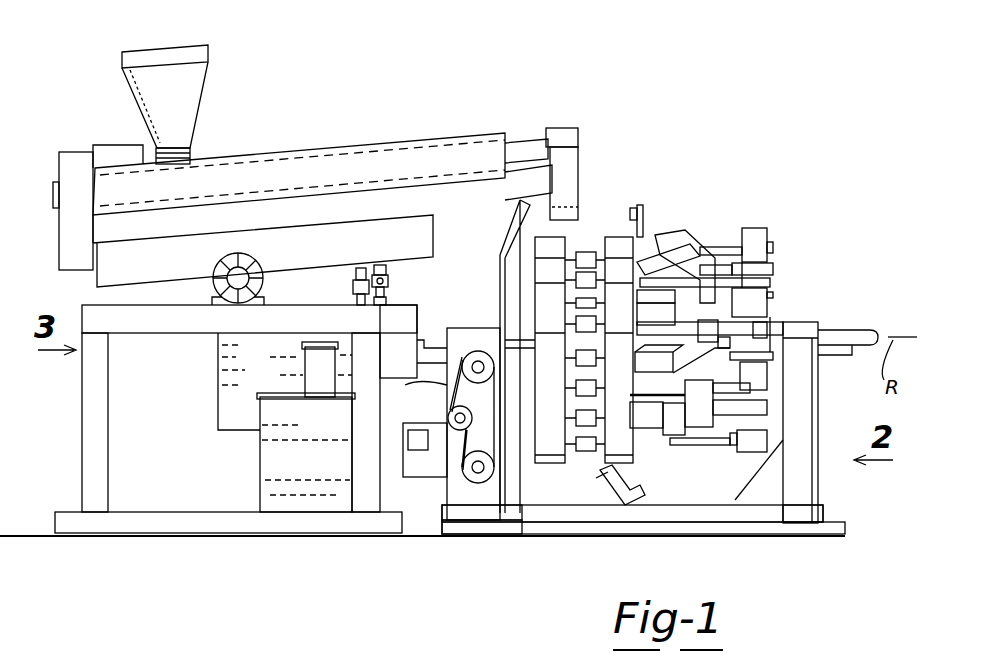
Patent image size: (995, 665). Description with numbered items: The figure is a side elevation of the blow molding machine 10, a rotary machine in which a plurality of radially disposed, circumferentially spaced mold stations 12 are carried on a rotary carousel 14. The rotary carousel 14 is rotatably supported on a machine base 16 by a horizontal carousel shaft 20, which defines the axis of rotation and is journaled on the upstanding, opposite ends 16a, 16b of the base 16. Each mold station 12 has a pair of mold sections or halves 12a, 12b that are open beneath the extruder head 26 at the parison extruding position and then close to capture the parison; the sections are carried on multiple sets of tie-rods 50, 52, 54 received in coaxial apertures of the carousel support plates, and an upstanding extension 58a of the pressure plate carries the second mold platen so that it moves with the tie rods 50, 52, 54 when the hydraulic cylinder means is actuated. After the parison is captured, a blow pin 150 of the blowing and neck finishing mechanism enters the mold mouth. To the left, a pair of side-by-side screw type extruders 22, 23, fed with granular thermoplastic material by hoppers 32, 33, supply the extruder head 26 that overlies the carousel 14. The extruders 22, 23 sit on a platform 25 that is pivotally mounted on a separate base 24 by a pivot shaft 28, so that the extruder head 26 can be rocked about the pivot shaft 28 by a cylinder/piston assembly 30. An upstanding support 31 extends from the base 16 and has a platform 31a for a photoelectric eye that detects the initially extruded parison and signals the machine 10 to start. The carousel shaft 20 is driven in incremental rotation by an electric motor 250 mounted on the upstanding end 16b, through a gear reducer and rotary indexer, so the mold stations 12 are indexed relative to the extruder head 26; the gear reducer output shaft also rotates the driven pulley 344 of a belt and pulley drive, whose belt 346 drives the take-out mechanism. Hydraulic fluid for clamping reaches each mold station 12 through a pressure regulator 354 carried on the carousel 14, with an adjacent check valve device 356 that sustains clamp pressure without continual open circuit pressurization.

The blow molding machine 10 is at (677, 361).
The mold station 12 is at (600, 245).
The mold section 12a is at (640, 458).
The mold section 12b is at (604, 415).
The rotary carousel 14 is at (776, 320).
The machine base 16 is at (748, 512).
The upstanding end of base 16a is at (812, 494).
The upstanding end of base 16b is at (512, 478).
The carousel shaft 20 is at (850, 332).
The extruder 22 is at (279, 187).
The extruder 23 is at (355, 148).
The base 24 is at (90, 490).
The platform 25 is at (415, 243).
The extruder head 26 is at (578, 210).
The pivot shaft 28 is at (218, 300).
The cylinder/piston assembly 30 is at (350, 290).
The upstanding support 31 is at (496, 268).
The platform 31a is at (546, 205).
The hopper 32 is at (213, 104).
The hopper 33 is at (205, 67).
The tie-rod 50 is at (738, 250).
The tie-rod 52 is at (688, 447).
The tie-rod 54 is at (725, 450).
The upstanding extension of pressure plate 58a is at (685, 250).
The blow pin 150 is at (613, 482).
The electric motor 250 is at (436, 345).
The driven pulley 344 is at (472, 355).
The belt 346 is at (447, 388).
The hydraulic fluid pressure regulator 354 is at (768, 238).
The check valve device 356 is at (788, 256).